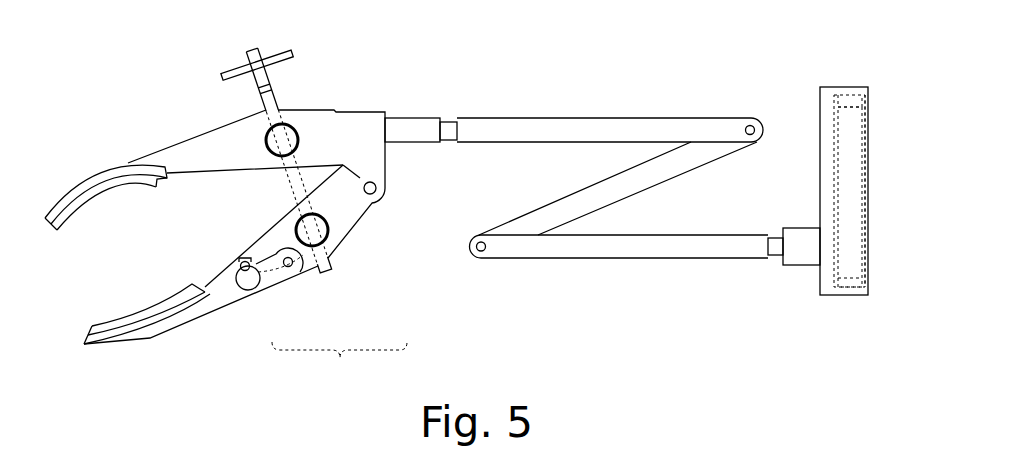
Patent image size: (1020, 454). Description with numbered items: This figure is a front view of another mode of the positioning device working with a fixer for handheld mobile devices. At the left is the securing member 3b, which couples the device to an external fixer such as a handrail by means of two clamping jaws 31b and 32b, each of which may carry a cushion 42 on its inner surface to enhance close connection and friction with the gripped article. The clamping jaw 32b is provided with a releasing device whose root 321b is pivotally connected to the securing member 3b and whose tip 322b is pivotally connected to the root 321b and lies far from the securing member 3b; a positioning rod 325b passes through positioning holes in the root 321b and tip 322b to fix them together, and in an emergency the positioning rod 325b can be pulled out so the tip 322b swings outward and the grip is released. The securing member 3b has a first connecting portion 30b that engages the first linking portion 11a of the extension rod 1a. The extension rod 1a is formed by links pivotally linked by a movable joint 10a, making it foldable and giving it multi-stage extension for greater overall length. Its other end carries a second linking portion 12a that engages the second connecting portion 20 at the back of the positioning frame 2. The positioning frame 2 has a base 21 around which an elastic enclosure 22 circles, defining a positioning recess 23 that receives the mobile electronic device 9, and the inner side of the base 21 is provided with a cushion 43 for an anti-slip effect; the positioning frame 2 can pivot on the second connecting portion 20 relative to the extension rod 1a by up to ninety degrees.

The extension rod 1a is at (592, 109).
The movable joint 10a is at (474, 252).
The first linking portion 11a is at (448, 137).
The second linking portion 12a is at (775, 250).
The positioning frame 2 is at (831, 301).
The second connecting portion 20 is at (798, 233).
The base 21 is at (818, 190).
The elastic enclosure 22 is at (850, 92).
The positioning recess 23 is at (868, 108).
The cushion 43 is at (838, 96).
The mobile electronic device 9 is at (869, 263).
The securing member 3b is at (321, 101).
The first connecting portion 30b is at (412, 128).
The clamping jaw 31b is at (203, 140).
The clamping jaw 32b is at (339, 367).
The root 321b is at (347, 222).
The tip 322b is at (227, 290).
The positioning rod 325b is at (240, 253).
The cushion 42 is at (100, 196).